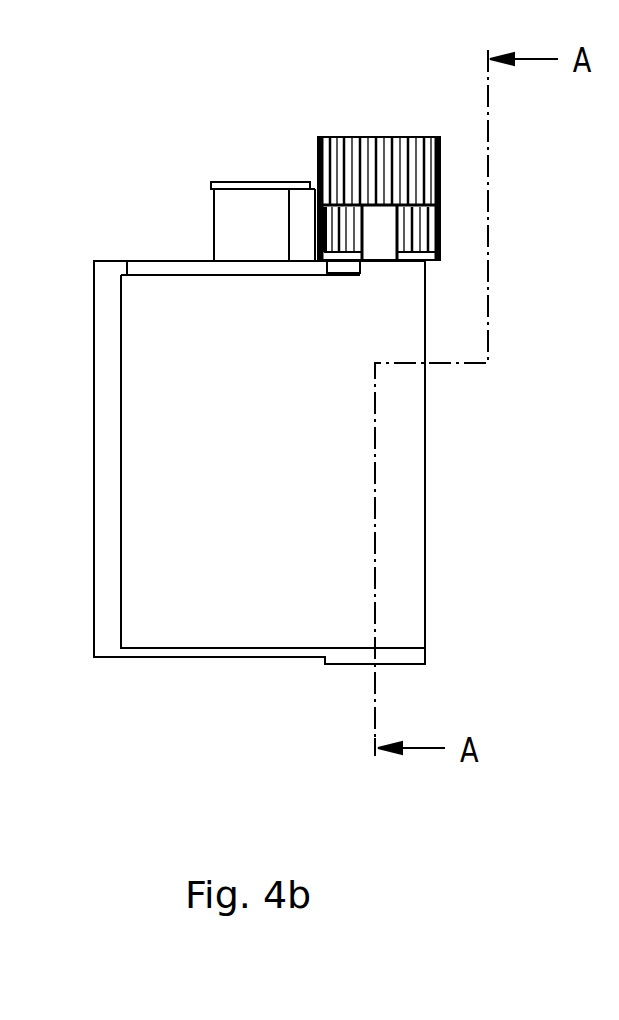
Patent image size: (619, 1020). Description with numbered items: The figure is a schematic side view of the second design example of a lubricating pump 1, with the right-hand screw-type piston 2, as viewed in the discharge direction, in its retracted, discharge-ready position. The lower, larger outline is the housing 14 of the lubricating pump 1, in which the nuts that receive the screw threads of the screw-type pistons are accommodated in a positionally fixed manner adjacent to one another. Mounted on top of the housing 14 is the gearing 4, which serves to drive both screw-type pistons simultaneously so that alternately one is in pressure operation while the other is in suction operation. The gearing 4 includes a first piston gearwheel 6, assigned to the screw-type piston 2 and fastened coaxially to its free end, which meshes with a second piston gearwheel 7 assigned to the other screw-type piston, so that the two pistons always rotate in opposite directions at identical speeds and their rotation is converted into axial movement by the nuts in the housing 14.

The lubricating pump 1 is at (265, 416).
The first screw-type piston 2 is at (378, 230).
The gearing 4 is at (353, 215).
The first piston gearwheel 6 is at (337, 157).
The second piston gearwheel 7 is at (420, 233).
The housing 14 is at (165, 630).